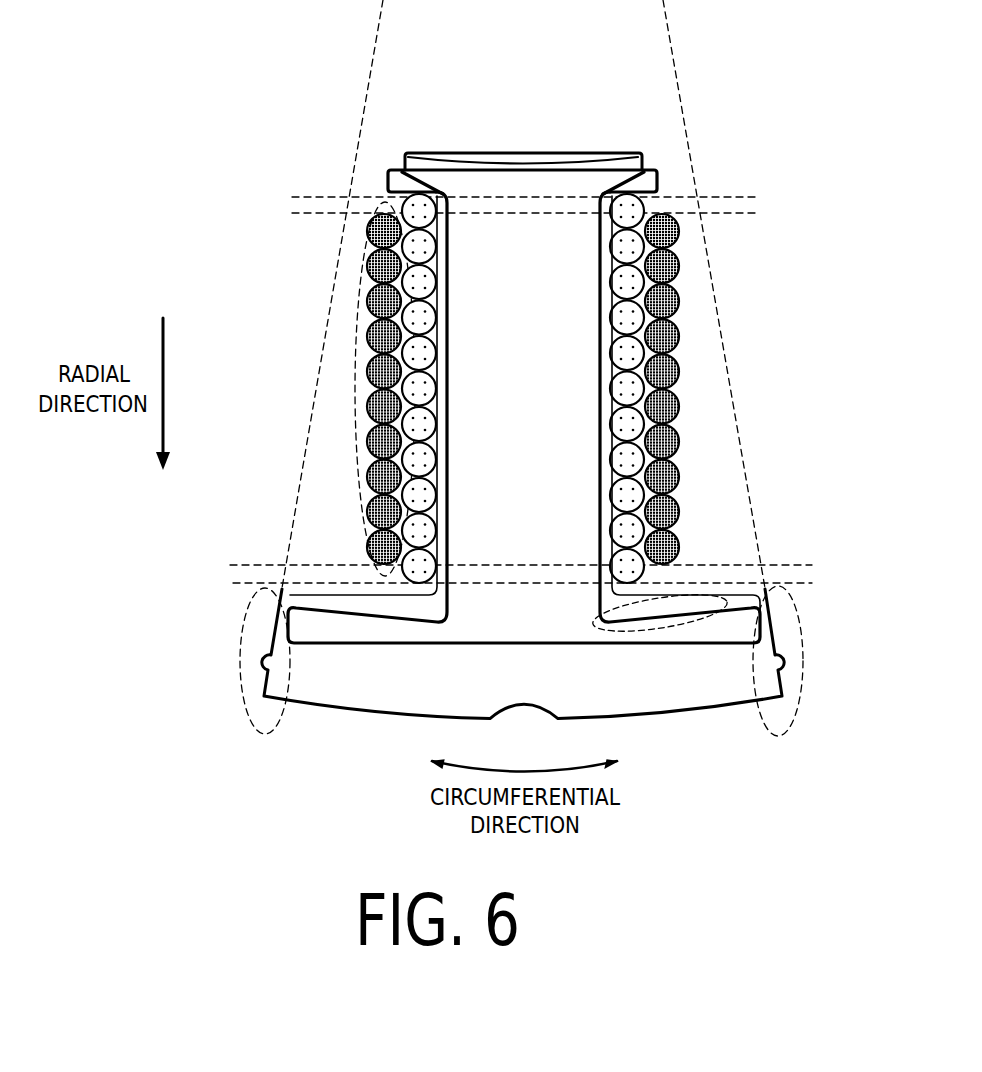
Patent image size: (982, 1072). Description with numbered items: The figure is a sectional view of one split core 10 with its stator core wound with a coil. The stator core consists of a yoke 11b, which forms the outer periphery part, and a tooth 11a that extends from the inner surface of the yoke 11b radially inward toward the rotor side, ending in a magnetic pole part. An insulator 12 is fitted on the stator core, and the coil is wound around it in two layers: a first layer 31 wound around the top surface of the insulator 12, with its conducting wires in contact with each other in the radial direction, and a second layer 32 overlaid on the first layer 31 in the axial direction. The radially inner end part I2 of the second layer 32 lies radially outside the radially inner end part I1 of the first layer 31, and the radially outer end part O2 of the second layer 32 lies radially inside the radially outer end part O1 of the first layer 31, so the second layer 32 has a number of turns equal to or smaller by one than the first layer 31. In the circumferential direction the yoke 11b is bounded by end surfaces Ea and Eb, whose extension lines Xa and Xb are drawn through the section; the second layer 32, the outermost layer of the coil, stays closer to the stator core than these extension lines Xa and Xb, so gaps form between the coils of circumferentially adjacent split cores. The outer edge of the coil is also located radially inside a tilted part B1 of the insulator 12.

The split core 10 is at (316, 128).
The tooth 11a is at (527, 242).
The yoke 11b is at (345, 688).
The insulator 12 is at (396, 180).
The first layer 31 is at (634, 152).
The second layer 32 is at (356, 384).
The extension line Xa is at (385, 12).
The extension line Xb is at (662, 15).
The end part I1 is at (730, 196).
The end part I2 is at (307, 213).
The end part O1 is at (244, 584).
The end part O2 is at (793, 564).
The tilted part B1 is at (697, 600).
The end surface Ea is at (254, 735).
The end surface Eb is at (780, 735).